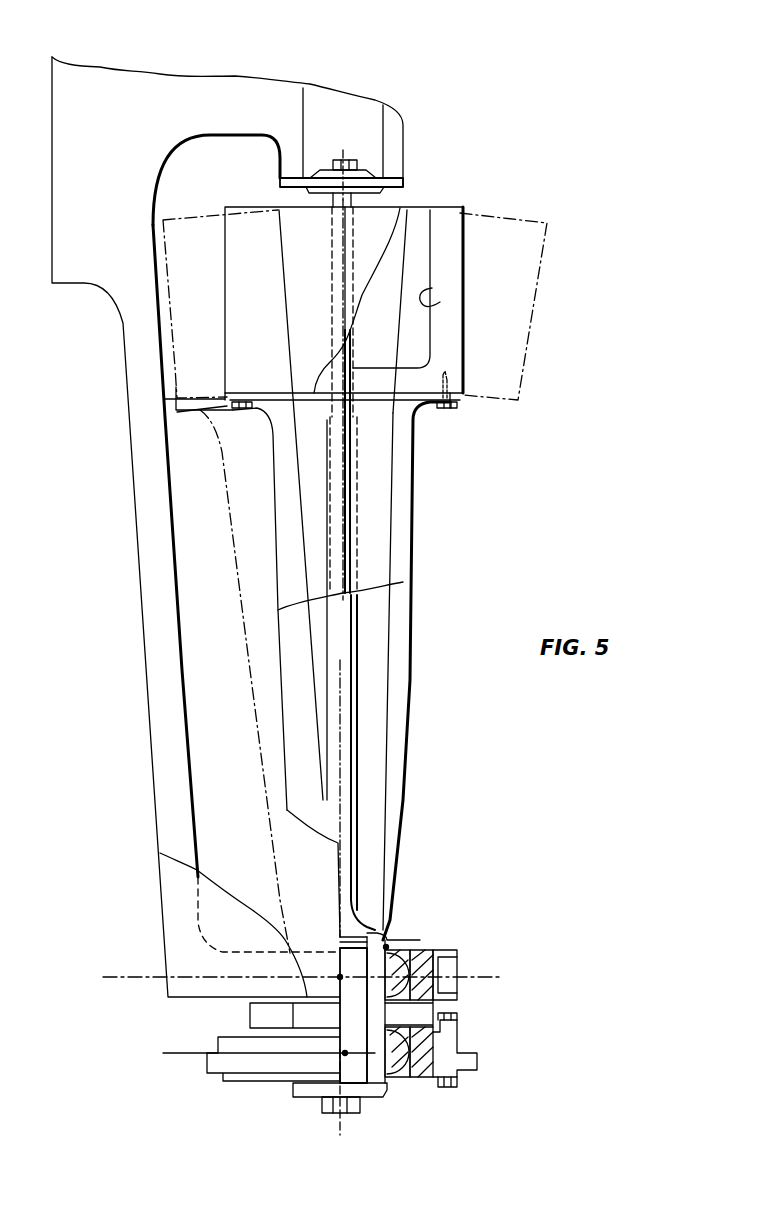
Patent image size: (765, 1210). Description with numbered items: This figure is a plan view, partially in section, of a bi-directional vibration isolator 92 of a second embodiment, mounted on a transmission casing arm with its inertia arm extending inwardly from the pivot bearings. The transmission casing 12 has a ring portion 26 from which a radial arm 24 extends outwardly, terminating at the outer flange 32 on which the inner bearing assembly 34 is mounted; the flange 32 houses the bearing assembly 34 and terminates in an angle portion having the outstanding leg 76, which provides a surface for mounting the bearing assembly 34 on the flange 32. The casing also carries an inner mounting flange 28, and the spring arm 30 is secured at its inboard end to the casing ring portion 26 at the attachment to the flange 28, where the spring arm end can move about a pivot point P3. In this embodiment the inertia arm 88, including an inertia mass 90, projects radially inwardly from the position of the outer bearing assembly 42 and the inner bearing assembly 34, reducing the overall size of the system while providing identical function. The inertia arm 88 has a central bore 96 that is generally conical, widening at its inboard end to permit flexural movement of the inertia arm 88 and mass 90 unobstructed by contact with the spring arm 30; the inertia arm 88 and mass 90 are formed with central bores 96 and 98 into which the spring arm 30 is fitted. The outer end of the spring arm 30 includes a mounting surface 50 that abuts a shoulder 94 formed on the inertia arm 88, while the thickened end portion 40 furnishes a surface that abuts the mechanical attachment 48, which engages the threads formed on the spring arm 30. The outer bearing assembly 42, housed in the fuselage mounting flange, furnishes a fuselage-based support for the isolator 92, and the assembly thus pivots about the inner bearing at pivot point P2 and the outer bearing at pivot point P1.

The transmission casing 12 is at (125, 54).
The ring portion 26 is at (278, 103).
The radial arm 24 is at (157, 535).
The inner mounting flange 28 is at (398, 181).
The pivot point P3 is at (338, 188).
The inertia mass 90 is at (455, 238).
The central bore 98 is at (440, 302).
The vibration isolator 92 is at (508, 461).
The inertia arm 88 is at (411, 623).
The central bore 96 is at (392, 680).
The spring arm 30 is at (345, 767).
The pivot point P2 is at (341, 978).
The mounting surface 50 is at (360, 946).
The shoulder 94 is at (390, 947).
The inner bearing assembly 34 is at (470, 941).
The outstanding leg 76 is at (463, 950).
The thickened end portion 40 is at (375, 1015).
The outer bearing assembly 42 is at (413, 1100).
The outer flange 32 is at (183, 1000).
The mechanical attachment 48 is at (323, 1113).
The pivot point P1 is at (346, 1053).